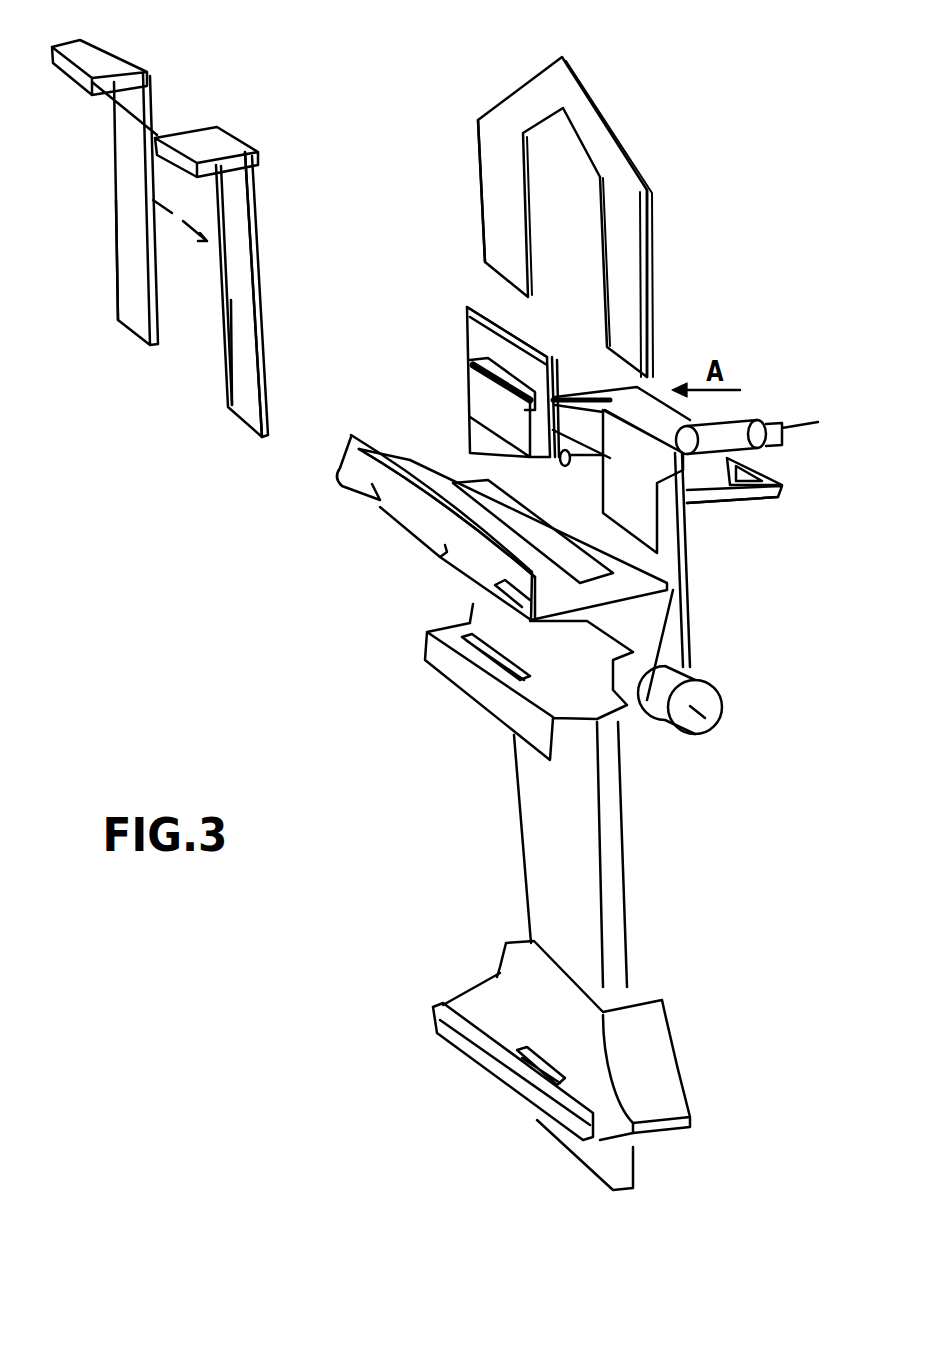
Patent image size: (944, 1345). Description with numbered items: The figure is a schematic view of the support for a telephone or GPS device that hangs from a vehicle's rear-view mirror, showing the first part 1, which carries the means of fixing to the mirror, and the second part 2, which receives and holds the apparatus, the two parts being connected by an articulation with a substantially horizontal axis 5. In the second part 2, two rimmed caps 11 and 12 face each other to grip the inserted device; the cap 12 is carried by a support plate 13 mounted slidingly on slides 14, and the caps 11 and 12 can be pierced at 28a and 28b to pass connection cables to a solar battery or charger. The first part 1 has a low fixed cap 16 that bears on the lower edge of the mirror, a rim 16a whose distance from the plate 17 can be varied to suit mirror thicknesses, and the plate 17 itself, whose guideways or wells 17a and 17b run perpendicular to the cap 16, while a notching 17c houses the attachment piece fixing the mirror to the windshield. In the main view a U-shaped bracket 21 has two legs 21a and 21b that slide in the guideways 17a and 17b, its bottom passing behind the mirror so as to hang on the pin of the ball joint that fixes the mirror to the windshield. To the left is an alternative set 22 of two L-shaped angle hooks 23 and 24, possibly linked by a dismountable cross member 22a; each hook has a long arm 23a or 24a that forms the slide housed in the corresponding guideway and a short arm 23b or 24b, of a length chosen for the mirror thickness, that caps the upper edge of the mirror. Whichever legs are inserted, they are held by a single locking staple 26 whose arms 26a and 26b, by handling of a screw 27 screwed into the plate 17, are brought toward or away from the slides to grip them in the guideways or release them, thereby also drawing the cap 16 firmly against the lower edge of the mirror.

The first part 1 is at (693, 648).
The second part 2 is at (623, 864).
The substantially horizontal axis 5 is at (763, 751).
The cap 11 is at (467, 699).
The cap 12 is at (480, 1007).
The support plate 13 is at (632, 991).
The slides 14 is at (552, 842).
The cap 16 is at (448, 468).
The rim 16a is at (450, 528).
The plate 17 is at (487, 440).
The guideway 17a is at (493, 395).
The guideway 17b is at (650, 523).
The notching 17c is at (530, 361).
The bracket 21 is at (607, 118).
The leg 21a is at (500, 201).
The leg 21b is at (630, 281).
The set of hooks 22 is at (257, 197).
The dismountable cross member 22a is at (123, 113).
The hook 23 is at (108, 199).
The long arm 23a is at (130, 281).
The short arm 23b is at (93, 58).
The hook 24 is at (257, 301).
The long arm 24a is at (238, 334).
The short arm 24b is at (203, 142).
The locking staple 26 is at (780, 441).
The arm 26a is at (573, 393).
The arm 26b is at (718, 503).
The screw 27 is at (737, 420).
The piercing 28a is at (440, 669).
The piercing 28b is at (557, 1079).